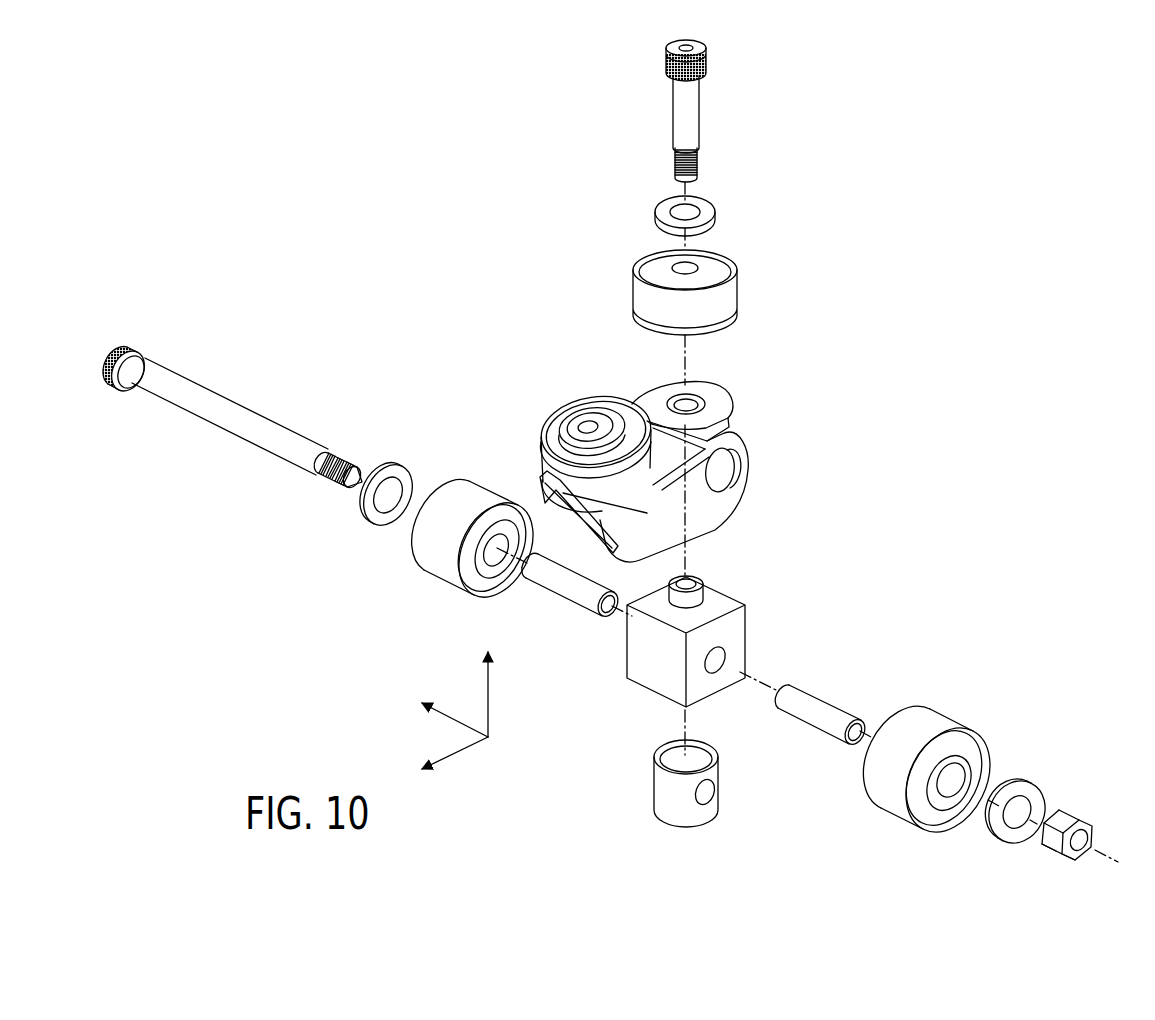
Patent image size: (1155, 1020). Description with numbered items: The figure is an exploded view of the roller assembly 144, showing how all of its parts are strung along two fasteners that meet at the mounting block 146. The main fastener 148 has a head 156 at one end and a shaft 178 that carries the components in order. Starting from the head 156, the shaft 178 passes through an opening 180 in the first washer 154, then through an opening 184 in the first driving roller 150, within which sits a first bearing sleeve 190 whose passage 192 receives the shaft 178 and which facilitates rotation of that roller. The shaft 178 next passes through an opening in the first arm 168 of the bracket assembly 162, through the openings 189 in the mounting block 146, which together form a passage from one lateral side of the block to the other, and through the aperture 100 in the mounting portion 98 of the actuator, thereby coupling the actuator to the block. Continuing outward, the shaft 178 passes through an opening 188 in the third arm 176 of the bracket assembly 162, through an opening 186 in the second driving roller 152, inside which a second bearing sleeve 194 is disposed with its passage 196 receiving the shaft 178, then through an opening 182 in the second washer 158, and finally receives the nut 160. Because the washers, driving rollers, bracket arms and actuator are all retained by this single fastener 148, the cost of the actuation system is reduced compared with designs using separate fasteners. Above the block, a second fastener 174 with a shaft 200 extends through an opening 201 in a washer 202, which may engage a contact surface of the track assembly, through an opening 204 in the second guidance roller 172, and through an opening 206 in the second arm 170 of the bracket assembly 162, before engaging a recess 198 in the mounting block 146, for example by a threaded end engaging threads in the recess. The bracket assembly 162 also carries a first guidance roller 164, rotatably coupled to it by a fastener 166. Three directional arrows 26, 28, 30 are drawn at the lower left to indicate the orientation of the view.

The roller assembly 144 is at (852, 451).
The fastener 174 is at (716, 103).
The shaft 200 is at (672, 115).
The opening 201 is at (683, 206).
The washer 202 is at (716, 213).
The second guidance roller 172 is at (738, 292).
The opening 204 is at (695, 270).
The bracket assembly 162 is at (752, 432).
The first guidance roller 164 is at (548, 420).
The fastener 166 is at (589, 425).
The second arm 170 is at (657, 398).
The opening 206 is at (703, 402).
The third arm 176 is at (720, 522).
The opening 188 is at (737, 484).
The first arm 168 is at (566, 523).
The mounting block 146 is at (746, 645).
The recess 198 is at (690, 582).
The openings 189 is at (717, 667).
The mounting portion 98 is at (655, 790).
The aperture 100 is at (710, 795).
The fastener 148 is at (216, 382).
The head 156 is at (137, 350).
The shaft 178 is at (271, 427).
The first washer 154 is at (403, 478).
The opening 180 is at (393, 520).
The first driving roller 150 is at (478, 493).
The opening 184 is at (497, 562).
The first bearing sleeve 190 is at (557, 596).
The passage 192 is at (609, 606).
The second bearing sleeve 194 is at (829, 706).
The passage 196 is at (853, 736).
The second driving roller 152 is at (946, 722).
The opening 186 is at (952, 787).
The second washer 158 is at (1029, 787).
The opening 182 is at (1018, 832).
The nut 160 is at (1083, 822).
The axis direction 26 is at (460, 716).
The axis direction 28 is at (456, 746).
The axis direction 30 is at (488, 702).